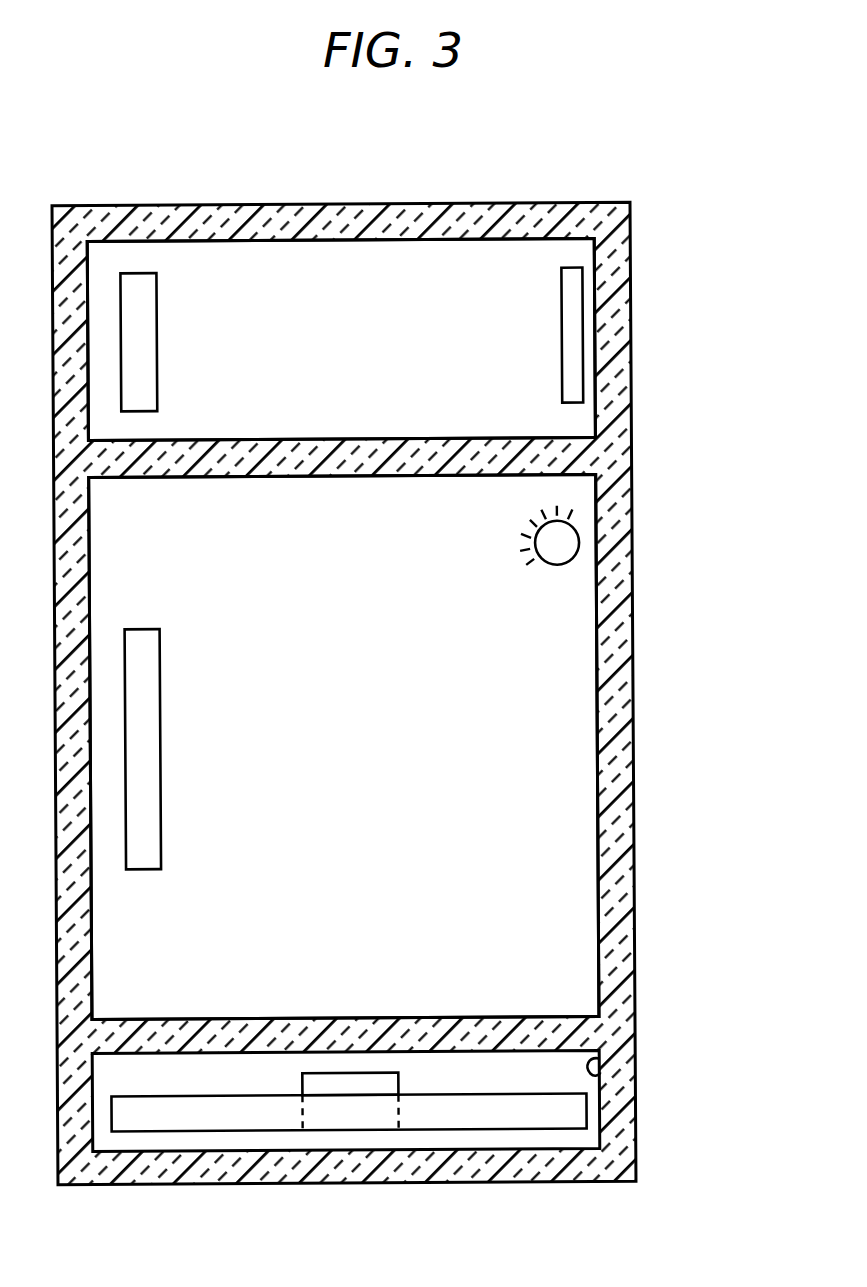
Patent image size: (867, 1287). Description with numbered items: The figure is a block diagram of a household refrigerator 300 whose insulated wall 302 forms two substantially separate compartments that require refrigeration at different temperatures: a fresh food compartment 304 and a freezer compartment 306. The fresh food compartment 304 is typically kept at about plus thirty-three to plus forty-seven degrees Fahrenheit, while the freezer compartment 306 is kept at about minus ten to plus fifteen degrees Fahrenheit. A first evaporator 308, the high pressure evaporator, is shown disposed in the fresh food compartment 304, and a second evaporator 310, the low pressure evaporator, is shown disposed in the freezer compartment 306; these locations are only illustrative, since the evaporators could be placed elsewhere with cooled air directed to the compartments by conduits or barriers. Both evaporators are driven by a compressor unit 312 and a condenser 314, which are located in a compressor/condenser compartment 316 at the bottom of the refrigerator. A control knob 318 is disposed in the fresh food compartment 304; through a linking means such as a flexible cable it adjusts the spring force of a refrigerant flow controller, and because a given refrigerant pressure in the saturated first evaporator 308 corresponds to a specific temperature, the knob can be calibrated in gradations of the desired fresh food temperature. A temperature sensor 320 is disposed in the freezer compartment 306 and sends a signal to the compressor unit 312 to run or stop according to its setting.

The household refrigerator 300 is at (541, 166).
The insulated wall 302 is at (631, 298).
The fresh food compartment 304 is at (350, 580).
The freezer compartment 306 is at (353, 372).
The first evaporator 308 is at (160, 801).
The second evaporator 310 is at (159, 300).
The compressor unit 312 is at (398, 1073).
The condenser 314 is at (195, 1095).
The compressor/condenser compartment 316 is at (597, 1062).
The control knob 318 is at (580, 544).
The temperature sensor 320 is at (585, 349).